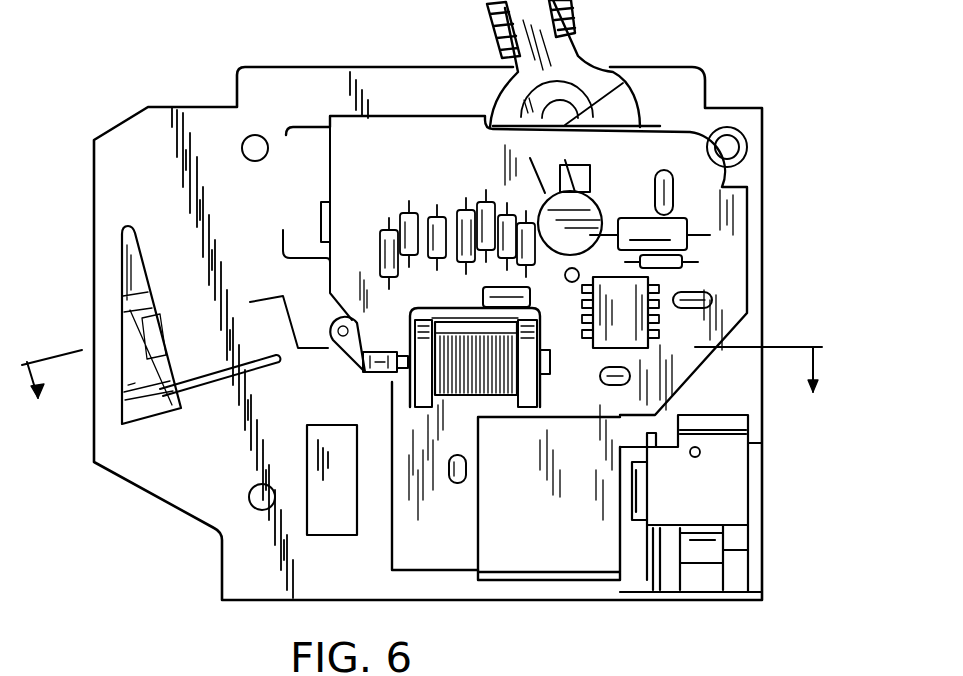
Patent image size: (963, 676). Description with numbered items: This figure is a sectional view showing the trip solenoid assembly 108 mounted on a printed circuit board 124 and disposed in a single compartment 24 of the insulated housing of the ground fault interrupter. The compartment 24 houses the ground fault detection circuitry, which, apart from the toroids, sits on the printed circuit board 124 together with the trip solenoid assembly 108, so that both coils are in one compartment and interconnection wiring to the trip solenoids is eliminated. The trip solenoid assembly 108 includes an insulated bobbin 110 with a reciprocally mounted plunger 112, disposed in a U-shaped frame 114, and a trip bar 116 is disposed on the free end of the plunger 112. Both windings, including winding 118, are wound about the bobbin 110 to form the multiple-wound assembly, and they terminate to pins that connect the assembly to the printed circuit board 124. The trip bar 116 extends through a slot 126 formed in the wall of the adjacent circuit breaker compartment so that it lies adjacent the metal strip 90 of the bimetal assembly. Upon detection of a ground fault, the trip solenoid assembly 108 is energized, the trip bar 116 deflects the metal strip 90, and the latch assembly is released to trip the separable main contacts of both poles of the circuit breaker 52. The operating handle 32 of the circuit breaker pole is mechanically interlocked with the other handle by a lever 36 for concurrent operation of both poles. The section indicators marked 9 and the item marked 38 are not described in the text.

The circuit breaker 52 is at (733, 90).
The compartment 24 is at (212, 472).
The operating handle 32 is at (563, 53).
The lever 36 is at (492, 32).
The printed circuit board 124 is at (735, 253).
The metal strip 90 is at (360, 333).
The slot 126 is at (365, 342).
The trip bar 116 is at (372, 377).
The insulated bobbin 110 is at (530, 413).
The U-shaped frame 114 is at (540, 390).
The plunger 112 is at (547, 363).
The winding 118 is at (465, 393).
The trip solenoid assembly 108 is at (495, 405).
The section line 9- 9 is at (422, 394).
The terminal 38 is at (620, 673).